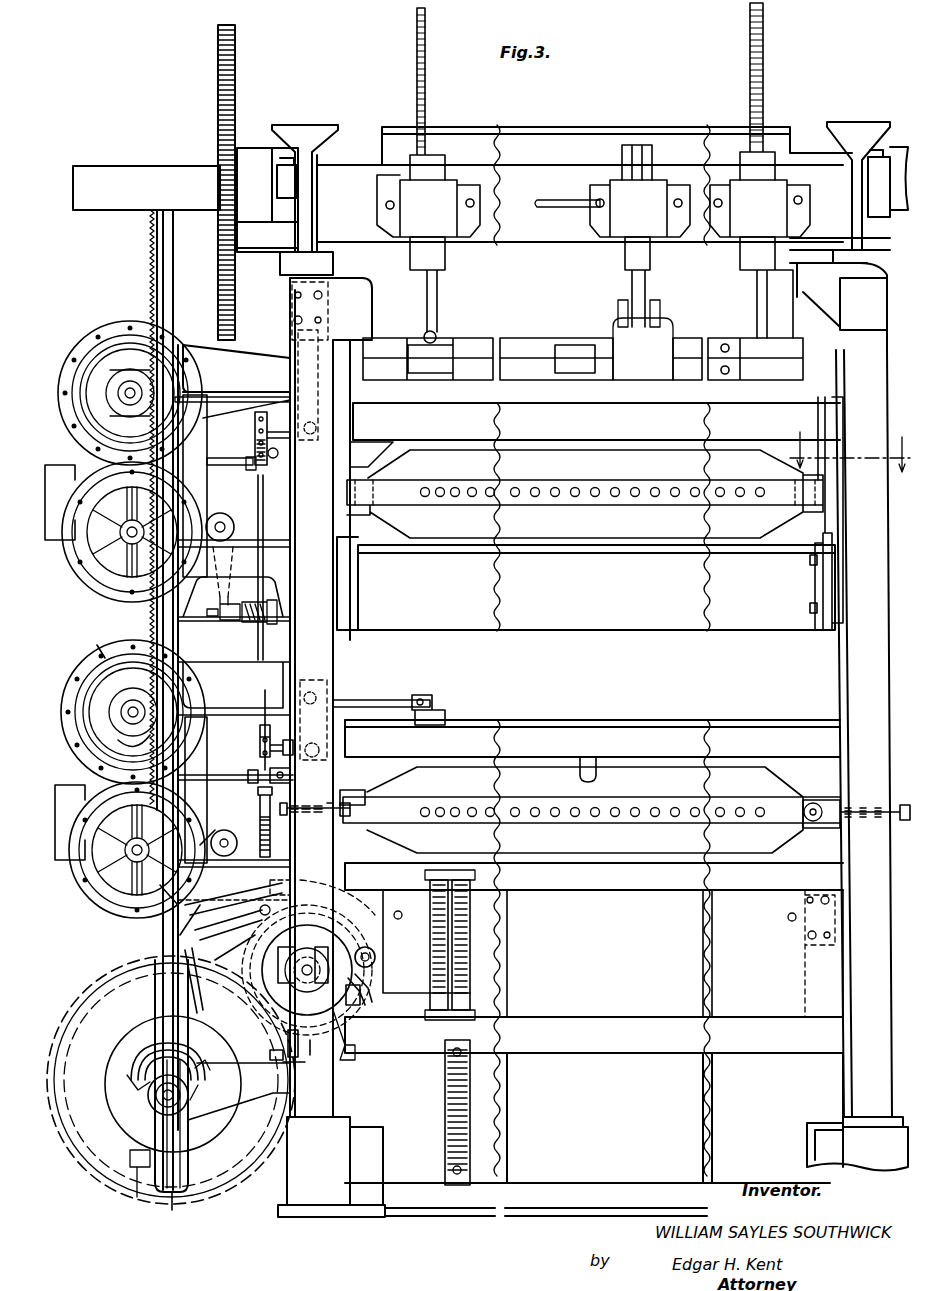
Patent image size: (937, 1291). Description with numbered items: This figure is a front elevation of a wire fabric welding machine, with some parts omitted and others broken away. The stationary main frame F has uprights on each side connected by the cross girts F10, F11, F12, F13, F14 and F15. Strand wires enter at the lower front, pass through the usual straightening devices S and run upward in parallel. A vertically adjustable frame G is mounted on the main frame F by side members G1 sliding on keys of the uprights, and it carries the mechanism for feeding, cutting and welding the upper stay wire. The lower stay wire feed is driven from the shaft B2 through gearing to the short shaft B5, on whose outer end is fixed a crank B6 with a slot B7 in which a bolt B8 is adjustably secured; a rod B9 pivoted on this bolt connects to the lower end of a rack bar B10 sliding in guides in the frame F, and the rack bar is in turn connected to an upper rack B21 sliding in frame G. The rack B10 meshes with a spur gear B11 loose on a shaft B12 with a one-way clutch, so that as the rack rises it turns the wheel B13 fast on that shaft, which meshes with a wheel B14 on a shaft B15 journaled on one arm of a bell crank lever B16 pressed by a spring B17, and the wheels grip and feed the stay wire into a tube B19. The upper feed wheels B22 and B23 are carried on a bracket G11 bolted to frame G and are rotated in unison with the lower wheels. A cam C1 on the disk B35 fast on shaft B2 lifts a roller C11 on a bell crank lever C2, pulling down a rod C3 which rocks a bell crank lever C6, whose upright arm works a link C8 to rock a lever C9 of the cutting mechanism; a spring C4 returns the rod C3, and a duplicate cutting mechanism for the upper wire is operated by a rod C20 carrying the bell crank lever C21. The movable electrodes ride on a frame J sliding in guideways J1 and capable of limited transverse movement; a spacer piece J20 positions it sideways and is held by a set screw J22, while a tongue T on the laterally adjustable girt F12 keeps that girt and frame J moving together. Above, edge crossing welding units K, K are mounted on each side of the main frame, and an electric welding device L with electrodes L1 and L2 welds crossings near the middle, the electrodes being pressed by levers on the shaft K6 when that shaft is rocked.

The main frame F is at (203, 733).
The cross girt F10 is at (606, 1065).
The cross girt F11 is at (573, 905).
The cross girt F12 is at (578, 725).
The cross girt F13 is at (467, 345).
The cross girt F14 is at (557, 225).
The cross girt F15 is at (570, 140).
The vertically adjustable frame G is at (205, 345).
The side member G1 is at (815, 596).
The bracket G11 is at (268, 280).
The movable frame J is at (410, 800).
The guideways J1 is at (360, 770).
The spacer piece J20 is at (350, 792).
The set screw J22 is at (873, 805).
The welding unit K is at (593, 173).
The shaft K6 is at (587, 347).
The electric welding device L is at (640, 236).
The electrode L1 is at (628, 325).
The electrode L2 is at (660, 325).
The straightening devices S is at (475, 928).
The tongue T is at (585, 775).
The shaft B2 is at (301, 1073).
The short shaft B5 is at (150, 1083).
The crank B6 is at (188, 1160).
The slot B7 is at (172, 1205).
The bolt B8 is at (188, 1097).
The rod B9 is at (165, 985).
The rack bar B10 is at (177, 800).
The spur gear B11 is at (105, 700).
The shaft B12 is at (125, 730).
The wheel B13 is at (100, 650).
The wheel B14 is at (85, 862).
The shaft B15 is at (112, 895).
The bell crank lever B16 is at (202, 833).
The spring B17 is at (262, 905).
The tube B19 is at (232, 775).
The upper rack B21 is at (160, 478).
The feed wheel B22 is at (120, 330).
The feed wheel B23 is at (82, 565).
The disk B35 is at (345, 1010).
The cam C1 is at (375, 952).
The bell crank lever C2 is at (355, 930).
The rod C3 is at (258, 648).
The spring C4 is at (272, 843).
The bell crank lever C6 is at (305, 690).
The link C8 is at (362, 703).
The lever C9 is at (418, 698).
The link C11 is at (372, 970).
The rod C20 is at (232, 502).
The bell crank lever C21 is at (305, 440).